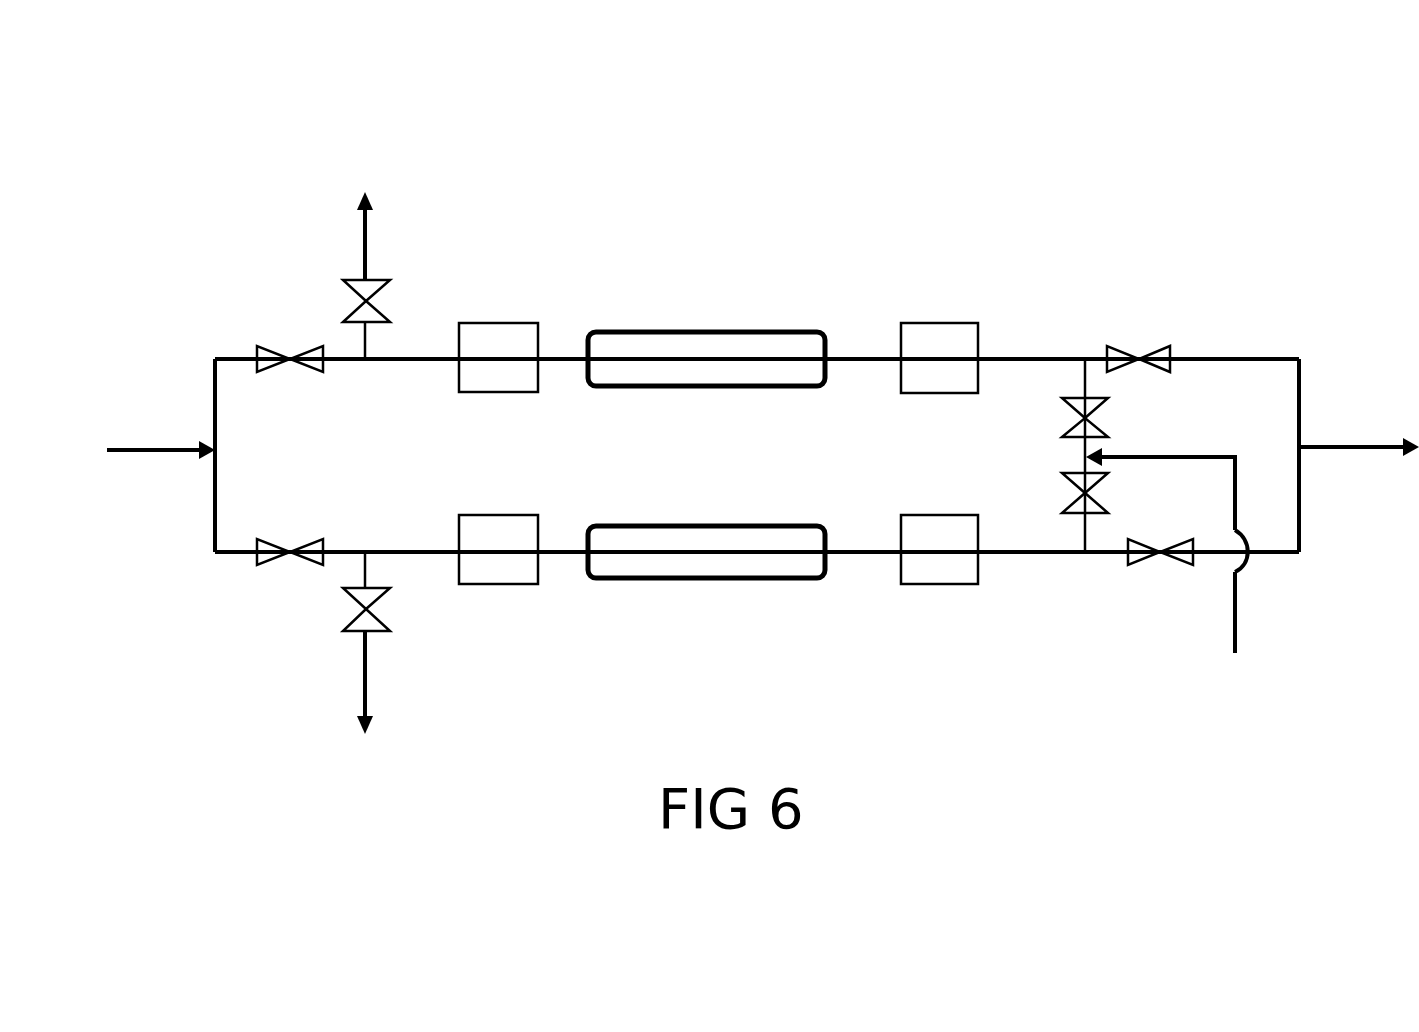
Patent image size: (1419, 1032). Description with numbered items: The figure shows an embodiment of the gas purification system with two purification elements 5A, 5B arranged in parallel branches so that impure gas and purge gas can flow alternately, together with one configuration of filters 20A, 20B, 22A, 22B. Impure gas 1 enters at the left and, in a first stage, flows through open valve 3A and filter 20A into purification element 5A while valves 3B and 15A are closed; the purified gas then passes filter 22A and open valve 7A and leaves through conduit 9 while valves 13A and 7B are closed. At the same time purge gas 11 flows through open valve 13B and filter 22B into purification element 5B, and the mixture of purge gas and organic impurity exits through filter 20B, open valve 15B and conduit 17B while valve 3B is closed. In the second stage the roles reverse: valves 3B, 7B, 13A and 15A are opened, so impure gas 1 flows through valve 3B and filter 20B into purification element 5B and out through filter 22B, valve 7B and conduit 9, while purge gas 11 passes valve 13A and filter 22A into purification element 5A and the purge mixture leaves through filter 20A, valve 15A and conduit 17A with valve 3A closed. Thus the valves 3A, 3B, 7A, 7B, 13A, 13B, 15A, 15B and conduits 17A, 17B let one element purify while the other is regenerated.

The impure gas 1 is at (145, 448).
The valve 3A is at (293, 357).
The valve 3B is at (305, 563).
The purification element 5A is at (705, 333).
The purification element 5B is at (728, 580).
The valve 7A is at (1146, 357).
The valve 7B is at (1182, 562).
The conduit 9 is at (1368, 452).
The purge gas 11 is at (1238, 605).
The valve 13A is at (1082, 424).
The valve 13B is at (1072, 487).
The valve 15A is at (388, 296).
The valve 15B is at (377, 600).
The conduit 17A is at (365, 240).
The conduit 17B is at (367, 685).
The filter 20A is at (503, 343).
The filter 20B is at (494, 562).
The filter 22A is at (940, 347).
The filter 22B is at (932, 560).